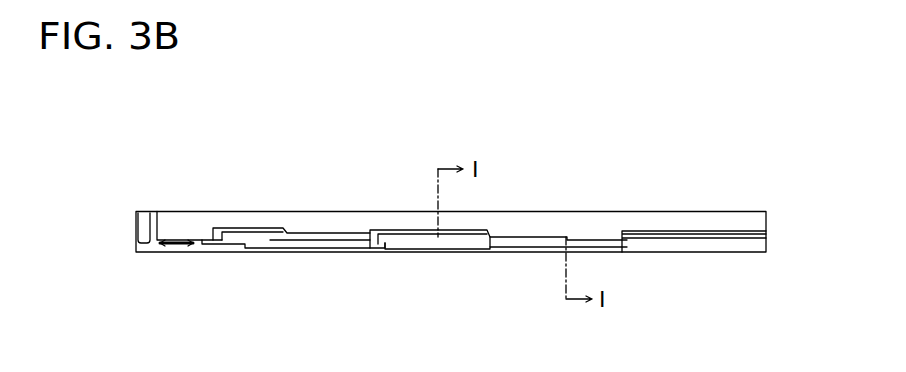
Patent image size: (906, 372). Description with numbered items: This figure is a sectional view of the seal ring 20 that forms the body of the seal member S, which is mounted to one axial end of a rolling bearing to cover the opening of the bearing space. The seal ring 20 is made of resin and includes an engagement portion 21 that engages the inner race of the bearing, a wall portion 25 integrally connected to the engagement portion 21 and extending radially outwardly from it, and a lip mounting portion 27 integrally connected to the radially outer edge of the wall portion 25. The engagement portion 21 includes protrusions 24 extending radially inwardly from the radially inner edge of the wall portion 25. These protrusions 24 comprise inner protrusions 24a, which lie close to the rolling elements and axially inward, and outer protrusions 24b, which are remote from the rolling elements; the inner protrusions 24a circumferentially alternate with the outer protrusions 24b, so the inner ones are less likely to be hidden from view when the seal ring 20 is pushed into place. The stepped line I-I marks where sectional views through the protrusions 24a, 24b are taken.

The seal ring 20 is at (339, 208).
The engagement portion 21 is at (322, 265).
The protrusions 24 is at (628, 171).
The inner protrusions 24a is at (655, 232).
The outer protrusions 24b is at (536, 193).
The wall portion 25 is at (207, 246).
The lip mounting portion 27 is at (143, 222).
The seal member S is at (727, 204).